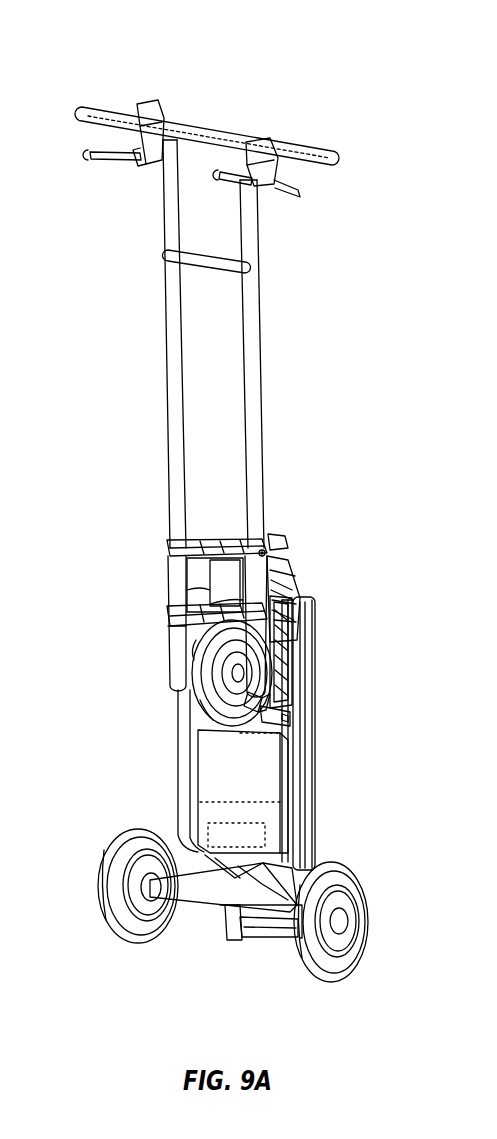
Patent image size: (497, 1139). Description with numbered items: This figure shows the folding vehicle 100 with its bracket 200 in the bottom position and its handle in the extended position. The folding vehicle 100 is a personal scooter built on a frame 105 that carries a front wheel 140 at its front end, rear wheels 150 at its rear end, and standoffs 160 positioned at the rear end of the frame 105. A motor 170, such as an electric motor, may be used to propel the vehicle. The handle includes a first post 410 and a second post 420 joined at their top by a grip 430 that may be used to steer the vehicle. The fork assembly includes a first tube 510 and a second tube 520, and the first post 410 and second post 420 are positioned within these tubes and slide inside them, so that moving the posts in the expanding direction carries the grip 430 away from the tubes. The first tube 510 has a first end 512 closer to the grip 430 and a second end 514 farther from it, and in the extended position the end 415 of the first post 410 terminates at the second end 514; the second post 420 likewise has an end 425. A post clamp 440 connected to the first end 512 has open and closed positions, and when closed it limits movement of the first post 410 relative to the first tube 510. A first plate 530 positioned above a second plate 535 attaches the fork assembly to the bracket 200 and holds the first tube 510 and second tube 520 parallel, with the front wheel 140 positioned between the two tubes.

The folding vehicle 100 is at (120, 42).
The grip 430 is at (213, 140).
The second post 420 is at (168, 322).
The first post 410 is at (255, 420).
The post clamp 440 is at (280, 535).
The first end 512 is at (263, 552).
The first plate 530 is at (168, 543).
The first tube 510 is at (262, 577).
The second tube 520 is at (170, 587).
The bracket 200 is at (280, 593).
The second plate 535 is at (168, 608).
The second end 514 is at (262, 700).
The end 425 is at (182, 686).
The end 415 is at (272, 722).
The front wheel 140 is at (197, 703).
The frame 105 is at (304, 783).
The motor 170 is at (220, 768).
The rear wheels 150 is at (112, 935).
The standoffs 160 is at (233, 935).